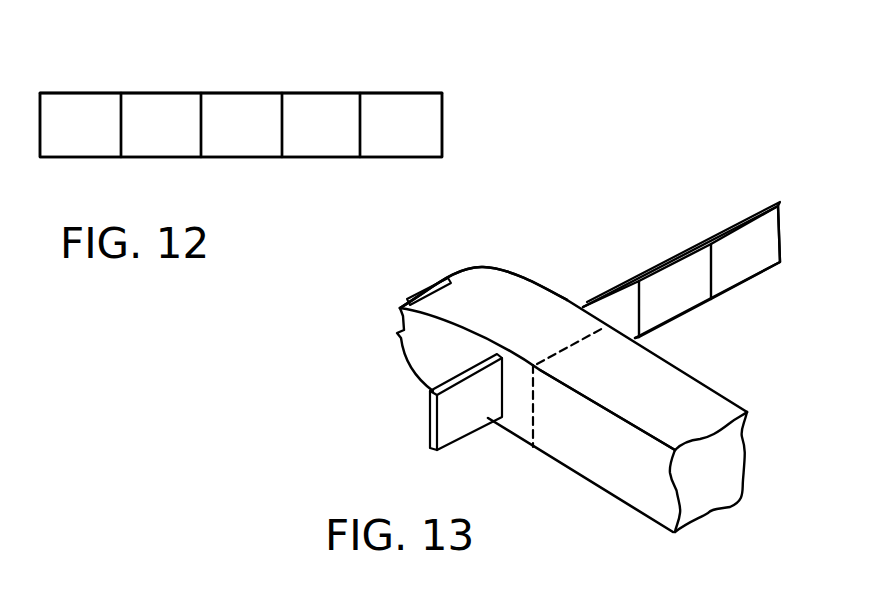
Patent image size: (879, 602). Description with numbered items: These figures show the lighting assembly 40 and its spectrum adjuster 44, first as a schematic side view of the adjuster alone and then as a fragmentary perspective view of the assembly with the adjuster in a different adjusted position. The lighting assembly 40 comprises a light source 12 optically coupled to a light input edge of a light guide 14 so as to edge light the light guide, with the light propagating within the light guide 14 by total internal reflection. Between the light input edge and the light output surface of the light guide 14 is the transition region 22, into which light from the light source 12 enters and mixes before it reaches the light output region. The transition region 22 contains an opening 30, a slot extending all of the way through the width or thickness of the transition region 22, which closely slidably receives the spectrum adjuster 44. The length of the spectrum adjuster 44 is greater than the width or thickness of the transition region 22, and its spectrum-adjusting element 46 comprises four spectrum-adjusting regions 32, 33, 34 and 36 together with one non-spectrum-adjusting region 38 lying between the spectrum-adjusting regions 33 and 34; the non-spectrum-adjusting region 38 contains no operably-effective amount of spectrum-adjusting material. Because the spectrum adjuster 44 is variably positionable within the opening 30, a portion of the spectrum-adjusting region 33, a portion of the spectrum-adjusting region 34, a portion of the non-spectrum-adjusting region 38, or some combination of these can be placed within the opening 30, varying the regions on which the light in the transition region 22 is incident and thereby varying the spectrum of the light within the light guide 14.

In FIG. 13, the light source 12 is at (423, 287).
In FIG. 13, the light guide 14 is at (583, 465).
In FIG. 13, the transition region 22 is at (510, 420).
In FIG. 13, the opening 30 is at (500, 382).
In FIG. 12, the spectrum-adjusting region 32 is at (77, 147).
In FIG. 13, the spectrum-adjusting region 32 is at (452, 404).
In FIG. 12, the spectrum-adjusting region 33 is at (157, 147).
In FIG. 12, the spectrum-adjusting region 34 is at (323, 147).
In FIG. 13, the spectrum-adjusting region 34 is at (680, 303).
In FIG. 12, the spectrum-adjusting region 36 is at (402, 147).
In FIG. 13, the spectrum-adjusting region 36 is at (747, 268).
In FIG. 12, the non-spectrum-adjusting region 38 is at (238, 147).
In FIG. 13, the non-spectrum-adjusting region 38 is at (615, 310).
In FIG. 13, the lighting assembly 40 is at (527, 248).
In FIG. 12, the spectrum adjuster 44 is at (292, 80).
In FIG. 13, the spectrum adjuster 44 is at (688, 237).
In FIG. 12, the spectrum-adjusting element 46 is at (388, 98).
In FIG. 13, the spectrum-adjusting element 46 is at (653, 270).